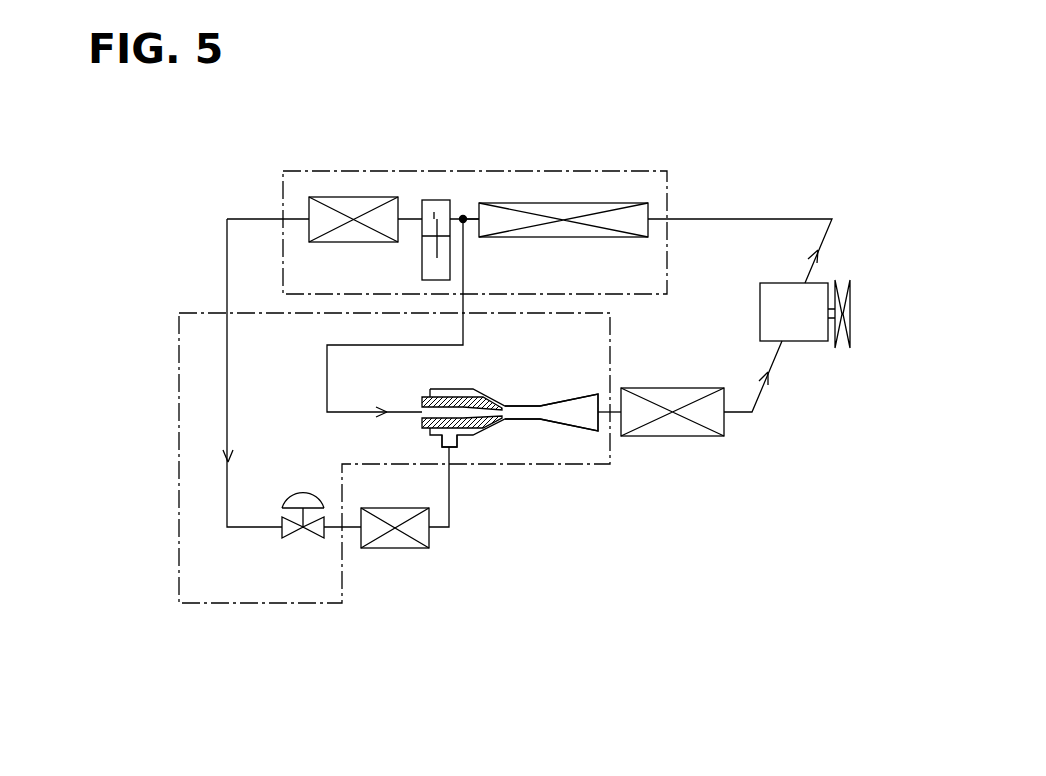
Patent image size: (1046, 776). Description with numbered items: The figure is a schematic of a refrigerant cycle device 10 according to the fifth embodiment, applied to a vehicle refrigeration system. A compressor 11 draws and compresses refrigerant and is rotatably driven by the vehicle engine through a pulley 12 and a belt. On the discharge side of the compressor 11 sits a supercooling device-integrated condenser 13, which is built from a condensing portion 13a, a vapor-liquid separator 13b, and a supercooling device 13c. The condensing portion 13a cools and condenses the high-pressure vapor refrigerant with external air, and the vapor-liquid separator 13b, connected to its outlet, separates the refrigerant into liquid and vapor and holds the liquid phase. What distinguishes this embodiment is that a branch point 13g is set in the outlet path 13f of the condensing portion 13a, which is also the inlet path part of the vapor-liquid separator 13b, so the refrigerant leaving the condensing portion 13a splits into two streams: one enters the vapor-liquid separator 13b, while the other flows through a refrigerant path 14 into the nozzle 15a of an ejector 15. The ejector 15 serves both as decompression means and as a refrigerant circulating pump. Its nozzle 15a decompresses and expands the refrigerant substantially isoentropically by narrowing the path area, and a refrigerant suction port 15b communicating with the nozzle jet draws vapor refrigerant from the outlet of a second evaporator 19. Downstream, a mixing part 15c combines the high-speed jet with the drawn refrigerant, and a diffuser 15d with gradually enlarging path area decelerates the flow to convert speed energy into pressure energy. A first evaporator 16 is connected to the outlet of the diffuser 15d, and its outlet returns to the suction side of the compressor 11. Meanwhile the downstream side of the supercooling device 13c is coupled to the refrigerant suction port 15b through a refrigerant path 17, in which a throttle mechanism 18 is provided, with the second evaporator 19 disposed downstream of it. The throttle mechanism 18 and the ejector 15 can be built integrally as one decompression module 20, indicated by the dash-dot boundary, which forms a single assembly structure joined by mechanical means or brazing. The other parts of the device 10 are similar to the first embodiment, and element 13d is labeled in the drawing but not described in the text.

The refrigerant cycle device 10 is at (772, 218).
The compressor 11 is at (818, 283).
The pulley 12 is at (850, 313).
The supercooling device-integrated condenser 13 is at (628, 171).
The condensing portion 13a is at (577, 202).
The vapor-liquid separator 13b is at (445, 200).
The supercooling device 13c is at (352, 197).
The receiver outlet 13d is at (433, 212).
The outlet path 13f is at (473, 217).
The branch point 13g is at (463, 215).
The refrigerant path 14 is at (370, 345).
The ejector 15 is at (550, 398).
The nozzle 15a is at (480, 397).
The refrigerant suction port 15b is at (458, 444).
The mixing part 15c is at (520, 413).
The diffuser 15d is at (575, 418).
The first evaporator 16 is at (724, 425).
The refrigerant path 17 is at (227, 275).
The throttle mechanism 18 is at (292, 537).
The second evaporator 19 is at (405, 548).
The decompression module 20 is at (178, 527).